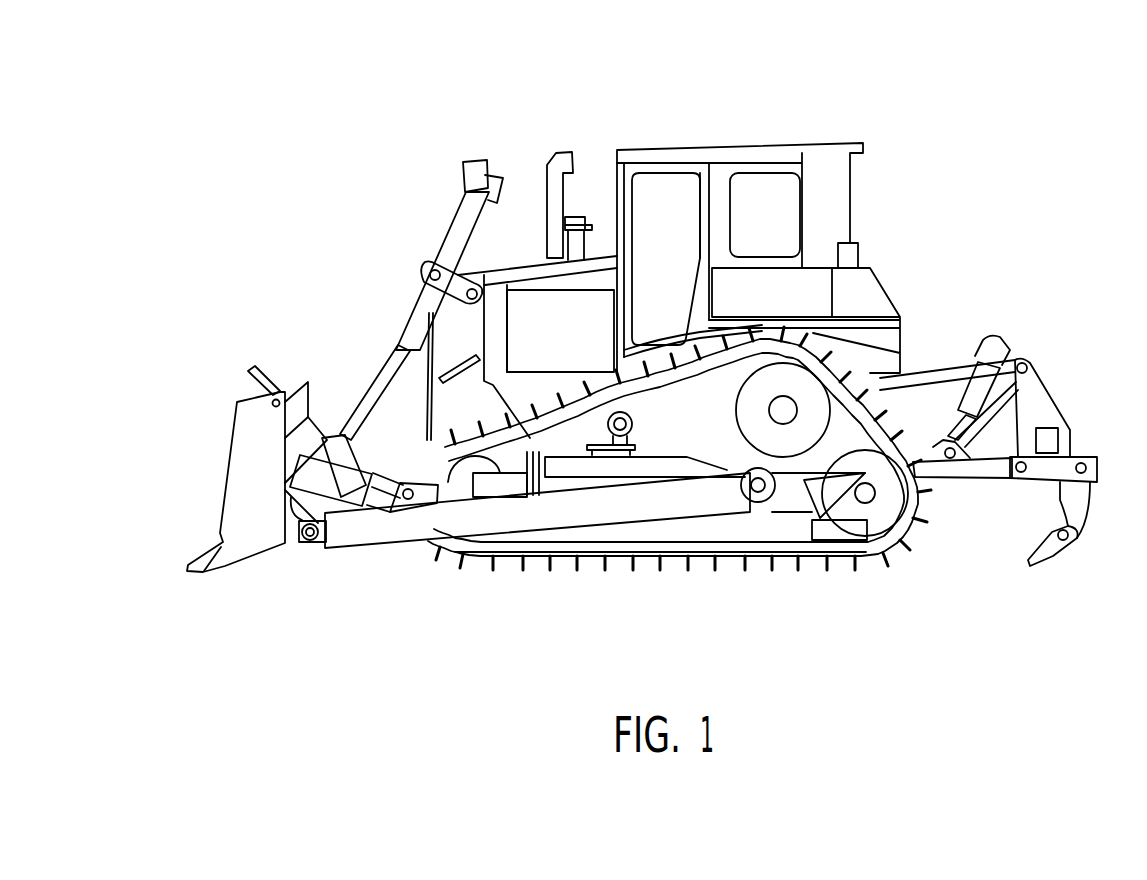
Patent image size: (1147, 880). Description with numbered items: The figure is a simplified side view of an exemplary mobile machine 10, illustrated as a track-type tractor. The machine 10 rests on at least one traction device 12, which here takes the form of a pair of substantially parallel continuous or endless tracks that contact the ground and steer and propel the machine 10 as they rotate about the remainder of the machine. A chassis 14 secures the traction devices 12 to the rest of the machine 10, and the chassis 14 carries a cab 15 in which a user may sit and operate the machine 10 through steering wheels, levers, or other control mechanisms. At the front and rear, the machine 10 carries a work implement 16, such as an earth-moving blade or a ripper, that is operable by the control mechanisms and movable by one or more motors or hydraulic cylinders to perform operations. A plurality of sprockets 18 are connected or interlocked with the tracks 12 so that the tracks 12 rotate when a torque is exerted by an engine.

The mobile machine 10 is at (946, 161).
The traction device 12 is at (692, 568).
The chassis 14 is at (467, 413).
The cab 15 is at (684, 143).
The work implement 16 is at (228, 474).
The sprocket 18 is at (744, 438).